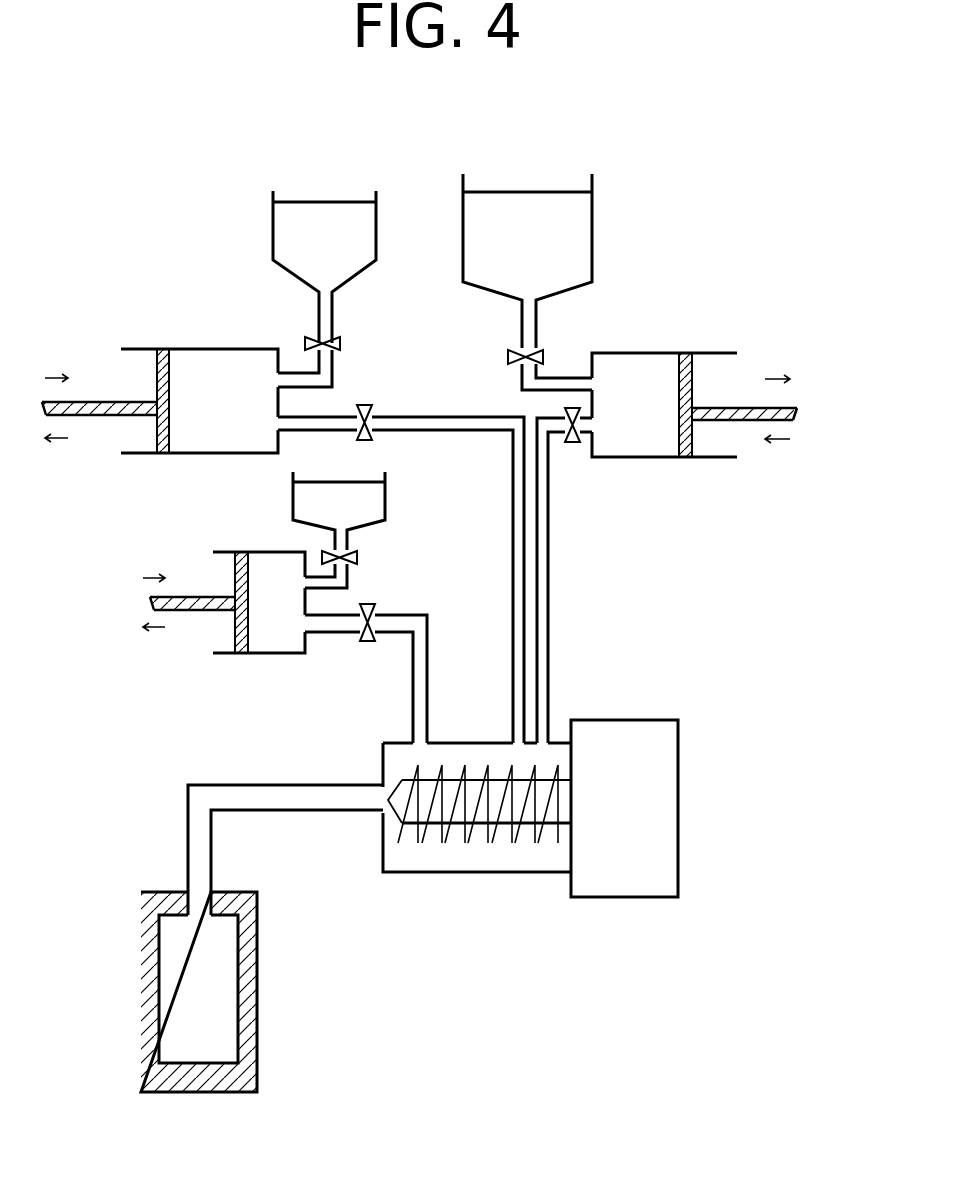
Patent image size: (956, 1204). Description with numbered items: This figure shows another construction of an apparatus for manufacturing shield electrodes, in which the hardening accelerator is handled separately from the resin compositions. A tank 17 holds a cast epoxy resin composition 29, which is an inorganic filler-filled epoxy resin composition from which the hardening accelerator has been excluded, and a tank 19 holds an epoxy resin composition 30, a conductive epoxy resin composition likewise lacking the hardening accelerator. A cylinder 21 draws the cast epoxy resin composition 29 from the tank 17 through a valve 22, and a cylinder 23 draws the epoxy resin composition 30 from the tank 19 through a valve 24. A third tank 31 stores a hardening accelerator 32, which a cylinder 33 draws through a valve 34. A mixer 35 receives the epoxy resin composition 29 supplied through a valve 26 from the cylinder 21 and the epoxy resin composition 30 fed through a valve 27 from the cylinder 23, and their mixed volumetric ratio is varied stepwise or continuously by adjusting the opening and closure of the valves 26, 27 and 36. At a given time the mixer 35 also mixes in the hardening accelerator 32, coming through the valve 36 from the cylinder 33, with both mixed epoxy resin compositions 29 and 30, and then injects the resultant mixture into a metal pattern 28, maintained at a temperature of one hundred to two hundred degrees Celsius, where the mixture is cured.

The tank 17 is at (273, 237).
The tank 19 is at (594, 205).
The cylinder 21 is at (195, 348).
The valve 22 is at (342, 343).
The cylinder 23 is at (652, 460).
The valve 24 is at (540, 353).
The valve 26 is at (360, 403).
The valve 27 is at (572, 445).
The metal pattern 28 is at (259, 975).
The cast epoxy resin composition 29 is at (355, 235).
The epoxy resin composition 30 is at (575, 250).
The tank 31 is at (291, 500).
The hardening accelerator 32 is at (375, 498).
The cylinder 33 is at (258, 655).
The valve 34 is at (359, 557).
The mixer 35 is at (452, 875).
The valve 36 is at (367, 643).